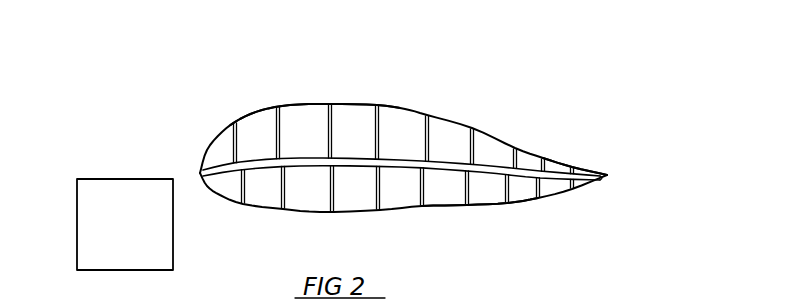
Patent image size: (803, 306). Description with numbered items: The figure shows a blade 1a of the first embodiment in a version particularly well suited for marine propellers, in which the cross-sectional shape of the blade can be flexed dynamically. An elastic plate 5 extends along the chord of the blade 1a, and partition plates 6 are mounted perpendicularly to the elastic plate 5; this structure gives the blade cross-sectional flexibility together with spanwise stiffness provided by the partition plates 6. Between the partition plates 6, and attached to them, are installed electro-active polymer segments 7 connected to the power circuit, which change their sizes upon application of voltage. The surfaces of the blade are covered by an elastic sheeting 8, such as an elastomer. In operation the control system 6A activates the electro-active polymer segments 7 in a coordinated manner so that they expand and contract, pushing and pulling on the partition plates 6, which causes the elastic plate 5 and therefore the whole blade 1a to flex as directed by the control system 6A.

The blade 1a is at (215, 152).
The elastic plate 5 is at (567, 165).
The partition plates 6 is at (435, 119).
The control system 6A is at (287, 208).
The electro-active polymer segments 7 is at (362, 125).
The elastic sheeting 8 is at (487, 208).